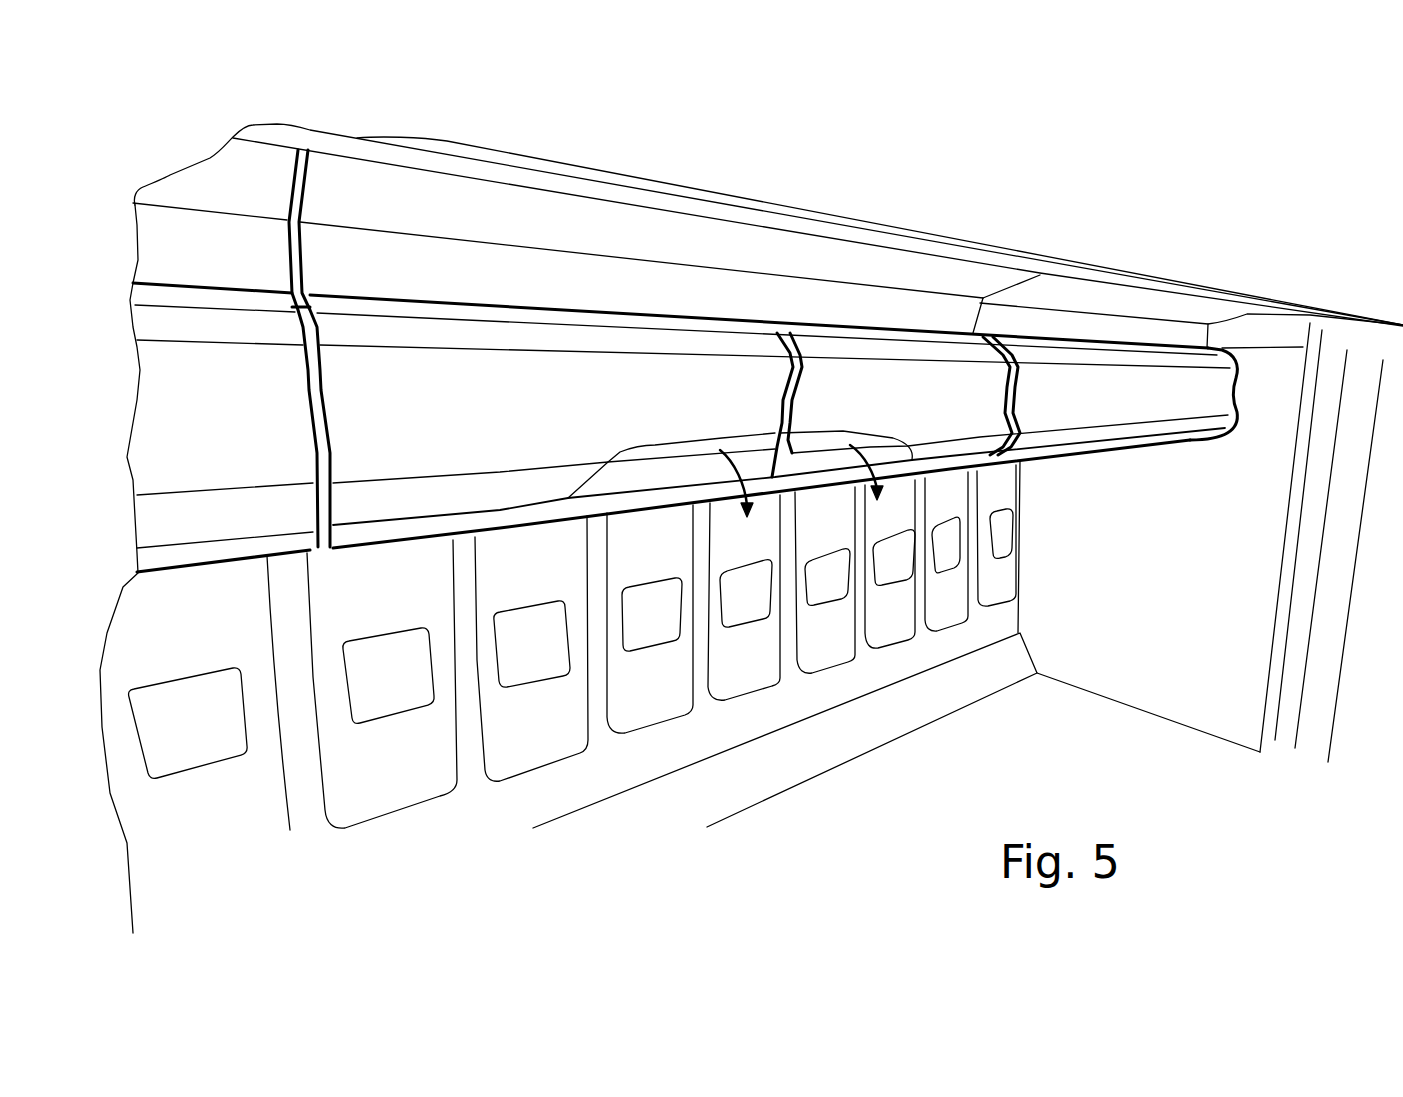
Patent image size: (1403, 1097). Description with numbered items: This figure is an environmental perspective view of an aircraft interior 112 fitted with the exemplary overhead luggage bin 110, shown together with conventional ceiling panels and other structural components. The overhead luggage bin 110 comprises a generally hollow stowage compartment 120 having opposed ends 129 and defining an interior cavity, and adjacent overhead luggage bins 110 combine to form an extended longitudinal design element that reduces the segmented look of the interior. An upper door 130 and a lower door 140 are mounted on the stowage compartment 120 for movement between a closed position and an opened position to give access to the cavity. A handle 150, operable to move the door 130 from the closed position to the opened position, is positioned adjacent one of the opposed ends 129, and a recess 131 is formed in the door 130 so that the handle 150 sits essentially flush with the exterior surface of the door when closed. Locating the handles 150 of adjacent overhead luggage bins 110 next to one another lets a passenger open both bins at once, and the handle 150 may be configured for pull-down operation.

The overhead luggage bin 110 is at (831, 301).
The aircraft interior 112 is at (962, 802).
The stowage compartment 120 is at (377, 297).
The opposed ends 129 is at (303, 390).
The door 130 is at (426, 427).
The recess 131 is at (763, 447).
The lower door 140 is at (378, 498).
The handle 150 is at (658, 478).